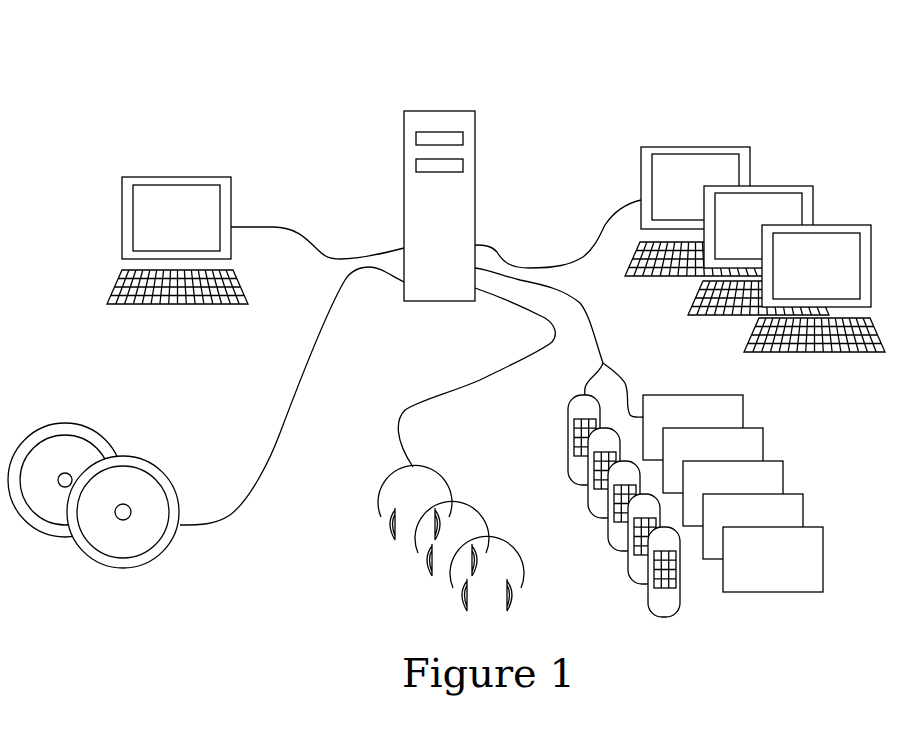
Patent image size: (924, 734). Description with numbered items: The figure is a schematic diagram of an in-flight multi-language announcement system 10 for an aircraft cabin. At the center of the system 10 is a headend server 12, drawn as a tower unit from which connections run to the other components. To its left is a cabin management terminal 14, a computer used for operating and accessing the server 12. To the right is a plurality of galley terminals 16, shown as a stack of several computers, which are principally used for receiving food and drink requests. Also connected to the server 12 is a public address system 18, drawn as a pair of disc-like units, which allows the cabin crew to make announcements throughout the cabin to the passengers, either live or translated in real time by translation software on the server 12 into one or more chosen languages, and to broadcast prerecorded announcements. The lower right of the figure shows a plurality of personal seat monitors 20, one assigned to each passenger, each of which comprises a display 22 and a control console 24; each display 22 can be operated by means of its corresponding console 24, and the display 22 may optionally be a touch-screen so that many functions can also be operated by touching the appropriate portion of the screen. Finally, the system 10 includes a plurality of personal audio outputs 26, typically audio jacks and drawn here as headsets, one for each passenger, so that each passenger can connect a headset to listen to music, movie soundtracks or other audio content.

The in-flight multi-language announcement system 10 is at (178, 106).
The headend server 12 is at (404, 198).
The cabin management terminal 14 is at (198, 306).
The galley terminals 16 is at (796, 133).
The public address system 18 is at (112, 565).
The personal seat monitors 20 is at (734, 527).
The display 22 is at (755, 592).
The control console 24 is at (672, 613).
The personal audio outputs 26 is at (380, 595).